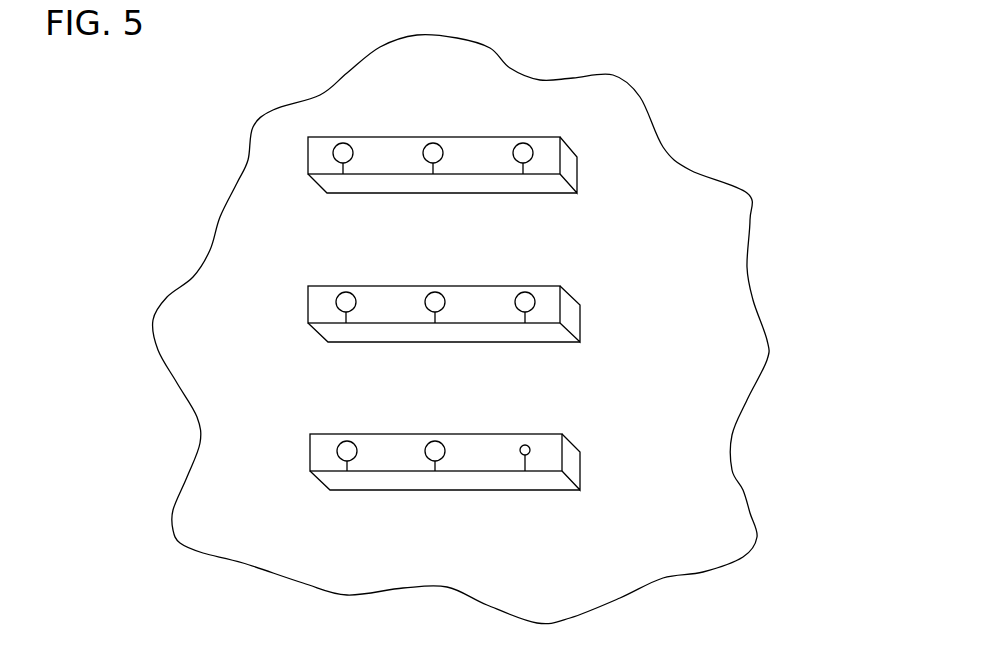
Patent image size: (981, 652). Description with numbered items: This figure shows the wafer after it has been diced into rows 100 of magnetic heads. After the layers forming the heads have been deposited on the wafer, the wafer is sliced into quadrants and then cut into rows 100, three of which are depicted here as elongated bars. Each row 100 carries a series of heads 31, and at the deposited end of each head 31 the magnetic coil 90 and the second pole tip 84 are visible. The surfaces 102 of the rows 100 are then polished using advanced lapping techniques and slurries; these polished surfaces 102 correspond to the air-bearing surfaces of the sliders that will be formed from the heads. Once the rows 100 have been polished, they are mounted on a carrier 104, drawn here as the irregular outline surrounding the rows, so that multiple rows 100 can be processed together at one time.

The head 31 is at (453, 147).
The second pole tip 84 is at (433, 174).
The magnetic coil 90 is at (433, 147).
The row 100 is at (620, 155).
The surface 102 is at (453, 183).
The carrier 104 is at (732, 435).